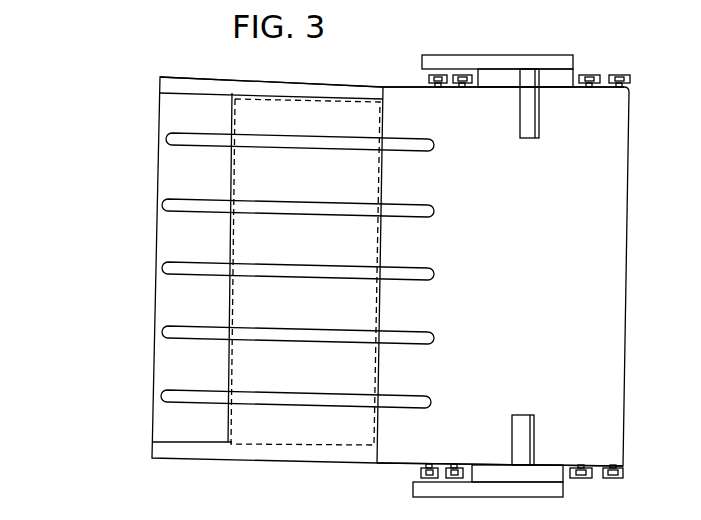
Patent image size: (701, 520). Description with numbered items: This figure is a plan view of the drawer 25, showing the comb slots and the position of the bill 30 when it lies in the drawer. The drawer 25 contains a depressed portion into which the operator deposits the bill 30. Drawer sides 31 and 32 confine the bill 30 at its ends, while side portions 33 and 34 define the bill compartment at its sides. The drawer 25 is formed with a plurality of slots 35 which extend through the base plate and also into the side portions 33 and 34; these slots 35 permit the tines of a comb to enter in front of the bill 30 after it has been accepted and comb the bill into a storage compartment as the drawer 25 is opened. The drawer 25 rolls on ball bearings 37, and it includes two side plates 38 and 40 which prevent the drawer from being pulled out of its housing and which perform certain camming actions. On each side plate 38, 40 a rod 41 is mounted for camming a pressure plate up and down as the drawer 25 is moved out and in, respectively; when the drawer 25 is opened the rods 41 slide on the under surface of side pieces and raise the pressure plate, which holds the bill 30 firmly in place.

The drawer 25 is at (100, 277).
The bill 30 is at (310, 442).
The drawer side 31 is at (294, 88).
The drawer side 32 is at (404, 462).
The side portion 33 is at (165, 218).
The side portion 34 is at (398, 92).
The slots 35 is at (293, 146).
The ball bearings 37 is at (462, 75).
The side plate 38 is at (533, 62).
The side plate 40 is at (494, 490).
The rod 41 is at (540, 117).